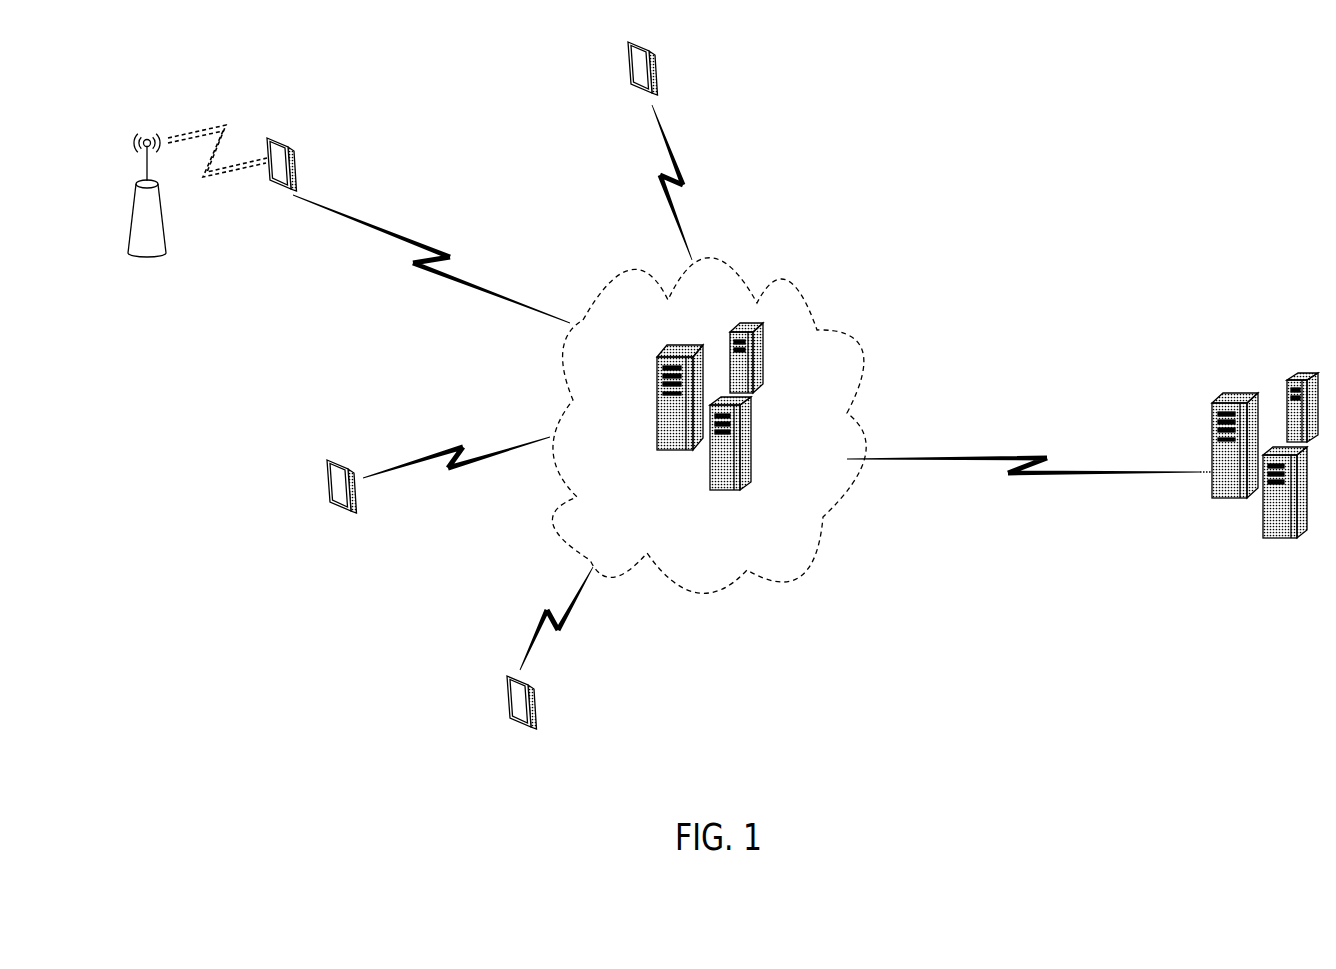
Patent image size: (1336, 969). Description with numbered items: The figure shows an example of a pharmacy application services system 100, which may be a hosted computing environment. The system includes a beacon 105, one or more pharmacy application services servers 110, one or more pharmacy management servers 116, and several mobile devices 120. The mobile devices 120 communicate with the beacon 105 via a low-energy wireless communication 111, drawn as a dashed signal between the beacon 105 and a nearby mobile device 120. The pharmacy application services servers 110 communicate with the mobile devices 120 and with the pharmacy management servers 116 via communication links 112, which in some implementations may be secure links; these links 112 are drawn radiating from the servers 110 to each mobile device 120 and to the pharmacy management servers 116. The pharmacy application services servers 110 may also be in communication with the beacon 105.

The pharmacy application services system 100 is at (1222, 769).
The beacon 105 is at (165, 252).
The pharmacy application services servers 110 is at (718, 495).
The low-energy wireless communication 111 is at (218, 128).
The communication links 112 is at (441, 253).
The pharmacy management servers 116 is at (1278, 543).
The mobile devices 120 is at (297, 172).